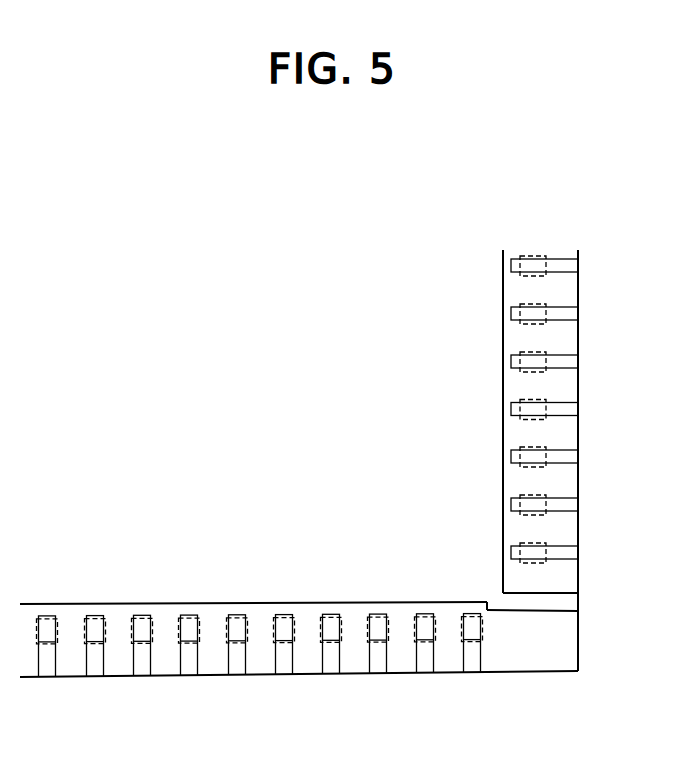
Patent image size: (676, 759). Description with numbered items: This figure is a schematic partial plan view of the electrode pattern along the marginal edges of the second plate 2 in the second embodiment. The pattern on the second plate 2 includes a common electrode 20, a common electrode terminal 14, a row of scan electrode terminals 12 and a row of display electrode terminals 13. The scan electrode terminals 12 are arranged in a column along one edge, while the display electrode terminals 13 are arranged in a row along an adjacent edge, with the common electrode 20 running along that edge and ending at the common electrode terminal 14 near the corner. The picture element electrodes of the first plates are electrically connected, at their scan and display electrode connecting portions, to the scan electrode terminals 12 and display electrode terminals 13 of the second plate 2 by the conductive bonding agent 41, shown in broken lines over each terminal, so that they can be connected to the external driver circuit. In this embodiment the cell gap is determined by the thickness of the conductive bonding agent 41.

The second plate 2 is at (563, 658).
The scan electrode terminals 12 is at (572, 410).
The display electrode terminals 13 is at (285, 663).
The common electrode terminal 14 is at (567, 602).
The common electrode 20 is at (442, 583).
The conductive bonding agent 41 is at (376, 637).